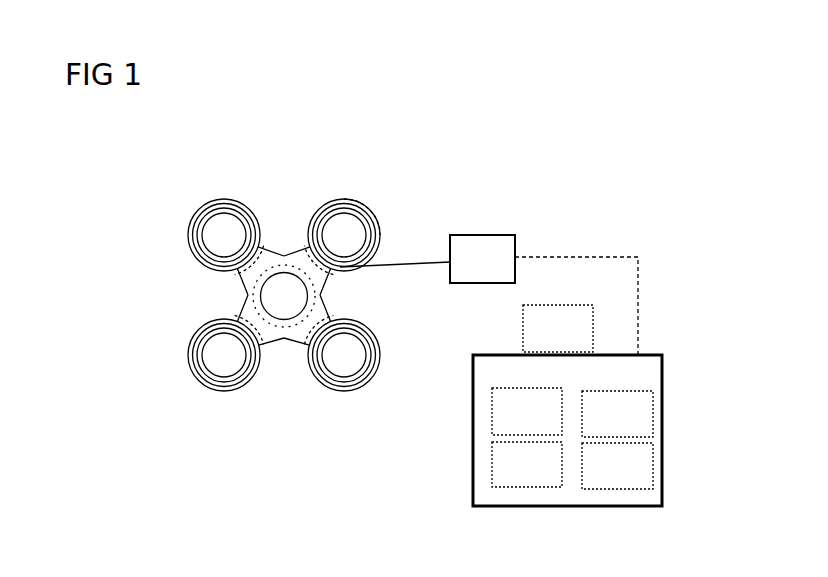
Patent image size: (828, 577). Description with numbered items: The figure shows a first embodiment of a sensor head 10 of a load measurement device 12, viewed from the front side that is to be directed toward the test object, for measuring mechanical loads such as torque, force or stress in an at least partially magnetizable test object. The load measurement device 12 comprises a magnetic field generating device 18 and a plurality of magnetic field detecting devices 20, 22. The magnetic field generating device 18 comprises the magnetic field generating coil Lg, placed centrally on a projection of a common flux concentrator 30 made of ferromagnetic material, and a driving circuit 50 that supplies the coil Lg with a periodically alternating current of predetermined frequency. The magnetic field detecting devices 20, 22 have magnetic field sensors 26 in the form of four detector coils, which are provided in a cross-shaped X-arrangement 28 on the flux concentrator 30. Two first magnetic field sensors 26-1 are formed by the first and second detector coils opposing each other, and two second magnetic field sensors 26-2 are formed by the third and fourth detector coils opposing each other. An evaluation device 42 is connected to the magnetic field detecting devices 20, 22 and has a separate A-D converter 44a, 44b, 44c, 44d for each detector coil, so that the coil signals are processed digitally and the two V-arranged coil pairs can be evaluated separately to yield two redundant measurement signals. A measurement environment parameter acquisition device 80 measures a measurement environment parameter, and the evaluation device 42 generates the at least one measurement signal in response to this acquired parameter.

The sensor head 10 is at (138, 300).
The load measurement device 12 is at (208, 470).
The magnetic field generating device 18 is at (326, 295).
The magnetic field detecting device 20 is at (207, 182).
The magnetic field detecting device 22 is at (167, 252).
The magnetic field sensor 26 is at (230, 177).
The first magnetic field sensor 26-1 is at (175, 232).
The second magnetic field sensor 26-2 is at (390, 228).
The X-arrangement 28 is at (343, 177).
The flux concentrator 30 is at (227, 307).
The evaluation device 42 is at (567, 430).
The A-D converter 44a is at (617, 466).
The A-D converter 44b is at (527, 411).
The A-D converter 44c is at (527, 464).
The A-D converter 44d is at (617, 414).
The driving circuit 50 is at (558, 328).
The measurement environment parameter acquisition device 80 is at (489, 295).